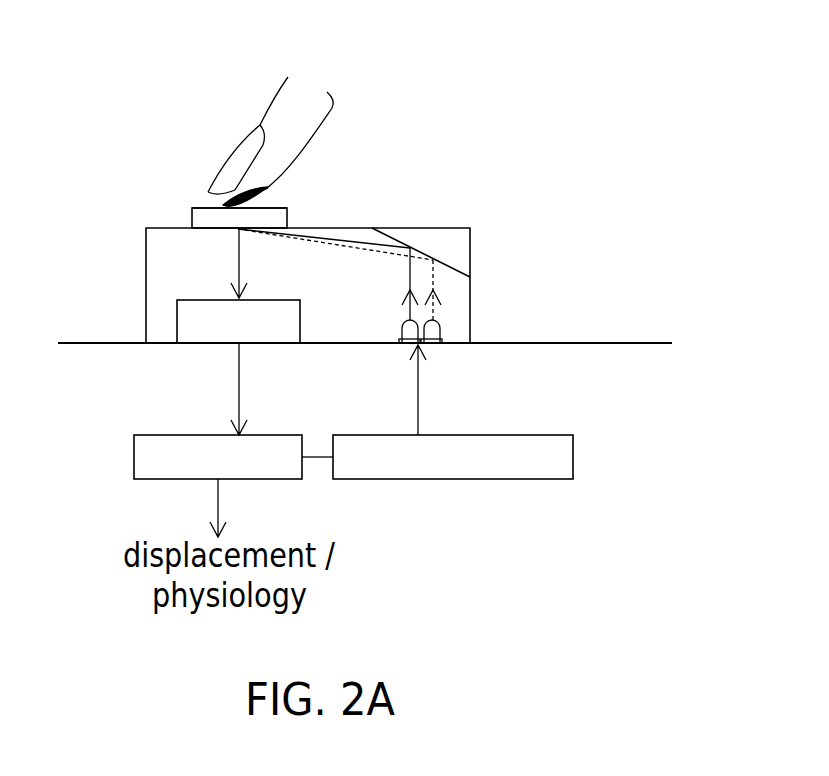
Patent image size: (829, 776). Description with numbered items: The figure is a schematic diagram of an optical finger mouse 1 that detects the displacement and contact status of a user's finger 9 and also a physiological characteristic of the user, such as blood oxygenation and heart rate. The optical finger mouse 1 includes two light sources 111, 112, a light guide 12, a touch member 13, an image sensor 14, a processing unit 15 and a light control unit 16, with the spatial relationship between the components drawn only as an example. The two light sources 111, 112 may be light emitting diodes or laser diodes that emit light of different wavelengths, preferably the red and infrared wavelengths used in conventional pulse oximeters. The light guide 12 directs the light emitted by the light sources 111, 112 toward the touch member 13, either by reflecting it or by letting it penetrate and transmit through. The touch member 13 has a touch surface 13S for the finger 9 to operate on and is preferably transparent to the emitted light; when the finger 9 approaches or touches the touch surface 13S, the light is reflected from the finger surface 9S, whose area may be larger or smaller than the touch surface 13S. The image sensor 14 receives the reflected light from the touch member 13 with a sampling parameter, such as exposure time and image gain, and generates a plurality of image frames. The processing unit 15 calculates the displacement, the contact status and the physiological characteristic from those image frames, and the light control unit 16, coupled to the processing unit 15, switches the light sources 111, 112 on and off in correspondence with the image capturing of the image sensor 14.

The optical finger mouse 1 is at (499, 189).
The finger 9 is at (273, 103).
The finger surface 9S is at (229, 207).
The light guide 12 is at (450, 253).
The touch member 13 is at (192, 215).
The touch surface 13S is at (283, 208).
The image sensor 14 is at (177, 323).
The processing unit 15 is at (134, 457).
The light control unit 16 is at (573, 462).
The light source 111 is at (400, 333).
The light source 112 is at (442, 333).